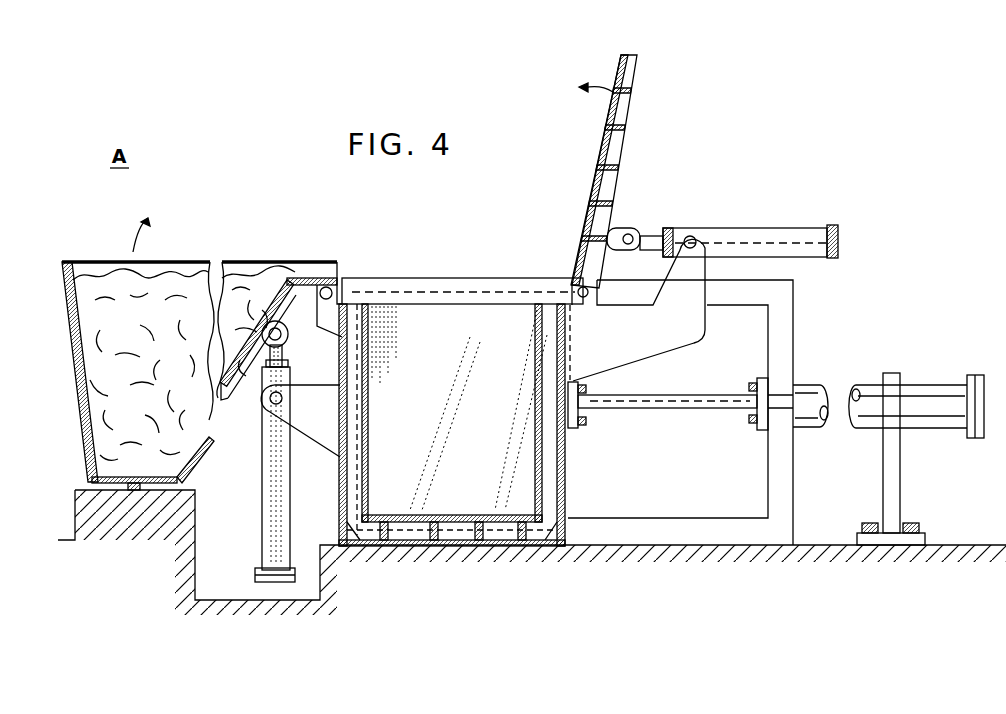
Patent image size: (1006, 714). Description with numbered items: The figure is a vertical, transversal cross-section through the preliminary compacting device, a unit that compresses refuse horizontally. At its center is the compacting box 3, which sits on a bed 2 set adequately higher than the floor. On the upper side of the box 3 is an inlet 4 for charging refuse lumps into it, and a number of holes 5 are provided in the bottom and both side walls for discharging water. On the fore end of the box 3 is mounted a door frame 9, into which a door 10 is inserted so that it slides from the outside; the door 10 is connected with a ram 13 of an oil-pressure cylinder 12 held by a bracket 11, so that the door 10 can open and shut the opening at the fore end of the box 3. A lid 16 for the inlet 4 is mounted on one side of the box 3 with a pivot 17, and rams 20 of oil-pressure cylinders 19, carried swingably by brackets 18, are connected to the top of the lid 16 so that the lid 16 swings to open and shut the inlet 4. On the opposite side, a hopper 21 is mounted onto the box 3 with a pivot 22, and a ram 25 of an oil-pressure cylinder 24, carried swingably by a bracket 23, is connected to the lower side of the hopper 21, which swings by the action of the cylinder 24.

The bed 2 is at (806, 548).
The compacting box 3 is at (386, 313).
The inlet 4 is at (442, 314).
The holes 5 is at (366, 437).
The door frame 9 is at (491, 286).
The door 10 is at (515, 467).
The bracket 11 is at (892, 374).
The oil-pressure cylinder 12 is at (808, 418).
The ram 13 is at (672, 407).
The lid 16 is at (606, 143).
The pivot 17 is at (577, 290).
The brackets 18 is at (673, 332).
The oil-pressure cylinders 19 is at (756, 236).
The rams 20 is at (654, 232).
The hopper 21 is at (112, 272).
The pivot 22 is at (326, 286).
The bracket 23 is at (324, 433).
The oil-pressure cylinder 24 is at (270, 503).
The ram 25 is at (286, 349).